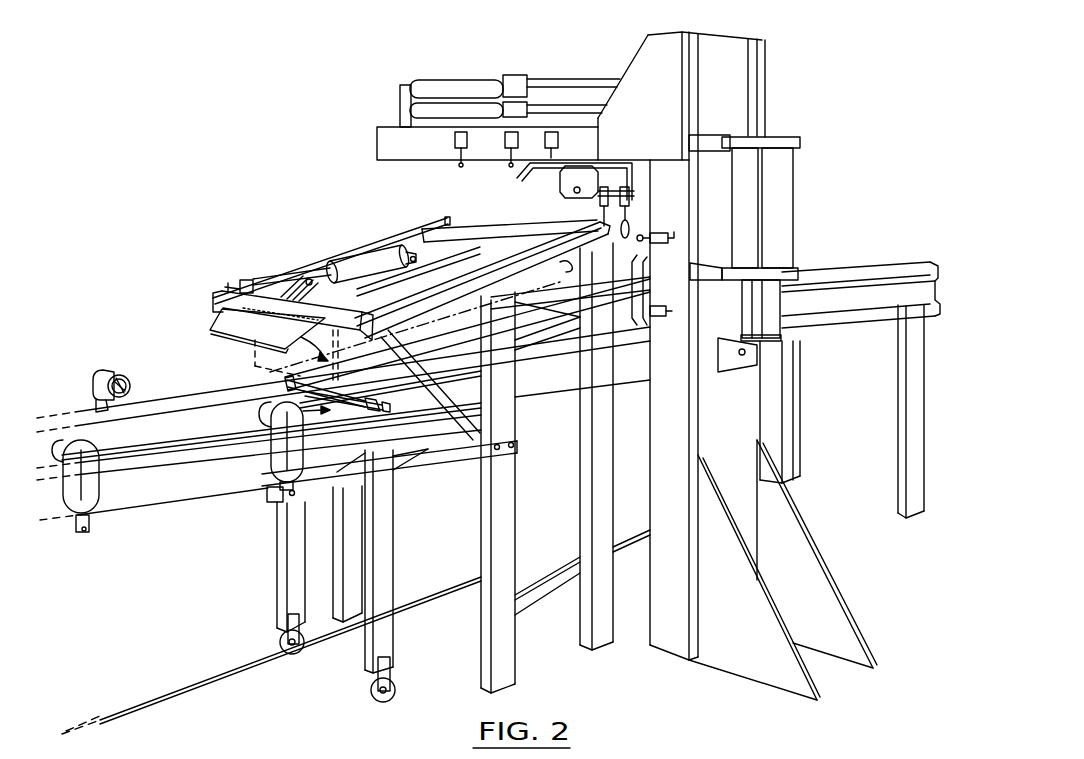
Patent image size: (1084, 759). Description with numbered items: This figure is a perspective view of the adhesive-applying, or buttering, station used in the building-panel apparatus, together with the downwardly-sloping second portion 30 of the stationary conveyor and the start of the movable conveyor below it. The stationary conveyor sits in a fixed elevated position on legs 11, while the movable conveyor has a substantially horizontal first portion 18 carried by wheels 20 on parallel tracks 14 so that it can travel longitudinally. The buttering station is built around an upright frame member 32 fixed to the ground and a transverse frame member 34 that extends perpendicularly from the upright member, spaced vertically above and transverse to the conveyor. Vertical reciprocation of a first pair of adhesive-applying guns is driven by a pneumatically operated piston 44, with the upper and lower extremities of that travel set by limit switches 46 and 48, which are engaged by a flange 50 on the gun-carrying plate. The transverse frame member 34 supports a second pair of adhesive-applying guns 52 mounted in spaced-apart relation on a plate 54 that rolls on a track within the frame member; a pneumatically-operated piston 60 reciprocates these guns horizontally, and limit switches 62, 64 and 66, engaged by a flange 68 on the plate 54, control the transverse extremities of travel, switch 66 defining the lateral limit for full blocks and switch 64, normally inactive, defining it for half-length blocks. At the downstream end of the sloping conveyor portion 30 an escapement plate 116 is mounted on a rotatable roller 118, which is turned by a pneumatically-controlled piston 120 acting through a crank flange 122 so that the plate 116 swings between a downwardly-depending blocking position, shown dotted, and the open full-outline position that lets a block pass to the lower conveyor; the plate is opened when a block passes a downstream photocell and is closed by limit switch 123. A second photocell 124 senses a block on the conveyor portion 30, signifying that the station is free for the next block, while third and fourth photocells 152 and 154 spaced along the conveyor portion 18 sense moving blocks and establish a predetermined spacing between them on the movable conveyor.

The legs 11 is at (897, 452).
The tracks 14 is at (257, 668).
The first portion 18 is at (212, 420).
The wheels 20 is at (372, 687).
The second portion 30 is at (472, 356).
The upright frame member 32 is at (667, 637).
The transverse frame member 34 is at (397, 130).
The pneumatically operated piston 44 is at (783, 212).
The limit switch 46 is at (660, 225).
The limit switch 48 is at (658, 316).
The flange 50 is at (630, 330).
The second pair of adhesive-applying guns 52 is at (634, 196).
The plate 54 is at (572, 194).
The pneumatically-operated piston 60 is at (442, 93).
The limit switch 62 is at (550, 131).
The limit switch 64 is at (505, 143).
The limit switch 66 is at (455, 141).
The flange 68 is at (533, 162).
The escapement plate 116 is at (226, 328).
The rotatable roller 118 is at (338, 318).
The pneumatically-controlled piston 120 is at (358, 262).
The crank flange 122 is at (285, 290).
The limit switch 123 is at (240, 283).
The second photocell 124 is at (567, 268).
The third photocell 152 is at (93, 381).
The fourth photocell 154 is at (98, 492).